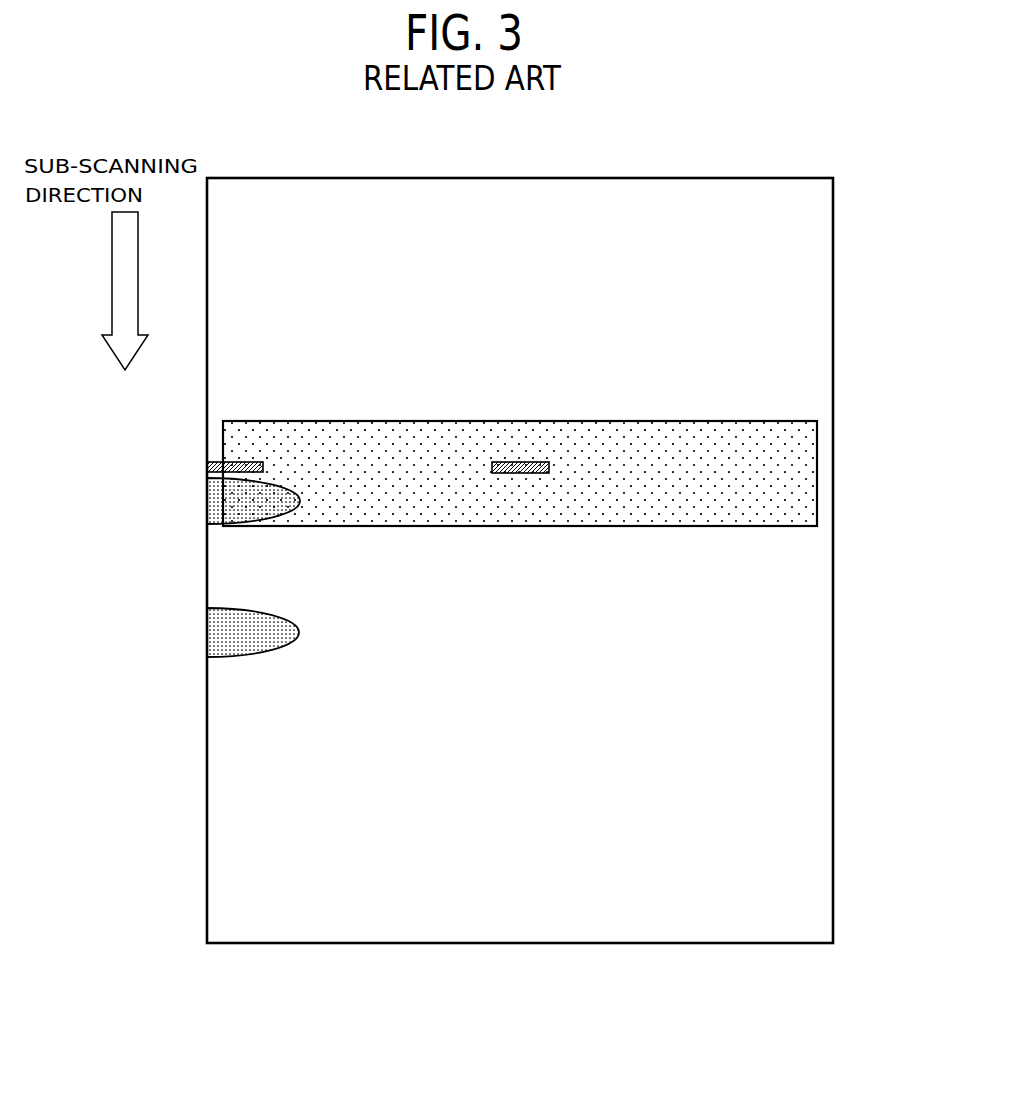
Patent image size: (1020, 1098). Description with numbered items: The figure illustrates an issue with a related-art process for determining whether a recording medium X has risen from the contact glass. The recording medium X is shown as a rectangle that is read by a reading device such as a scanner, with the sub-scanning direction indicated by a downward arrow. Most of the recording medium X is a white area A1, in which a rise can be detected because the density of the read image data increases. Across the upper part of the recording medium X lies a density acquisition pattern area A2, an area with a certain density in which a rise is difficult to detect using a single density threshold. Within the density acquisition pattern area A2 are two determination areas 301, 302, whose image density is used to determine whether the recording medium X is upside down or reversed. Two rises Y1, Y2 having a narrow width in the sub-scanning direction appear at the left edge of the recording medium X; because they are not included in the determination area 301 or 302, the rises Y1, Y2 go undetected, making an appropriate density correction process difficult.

The recording medium X is at (790, 178).
The white area A1 is at (712, 618).
The density acquisition pattern area A2 is at (771, 470).
The determination area 301 is at (236, 461).
The determination area 302 is at (521, 462).
The rise Y1 is at (223, 499).
The rise Y2 is at (222, 634).